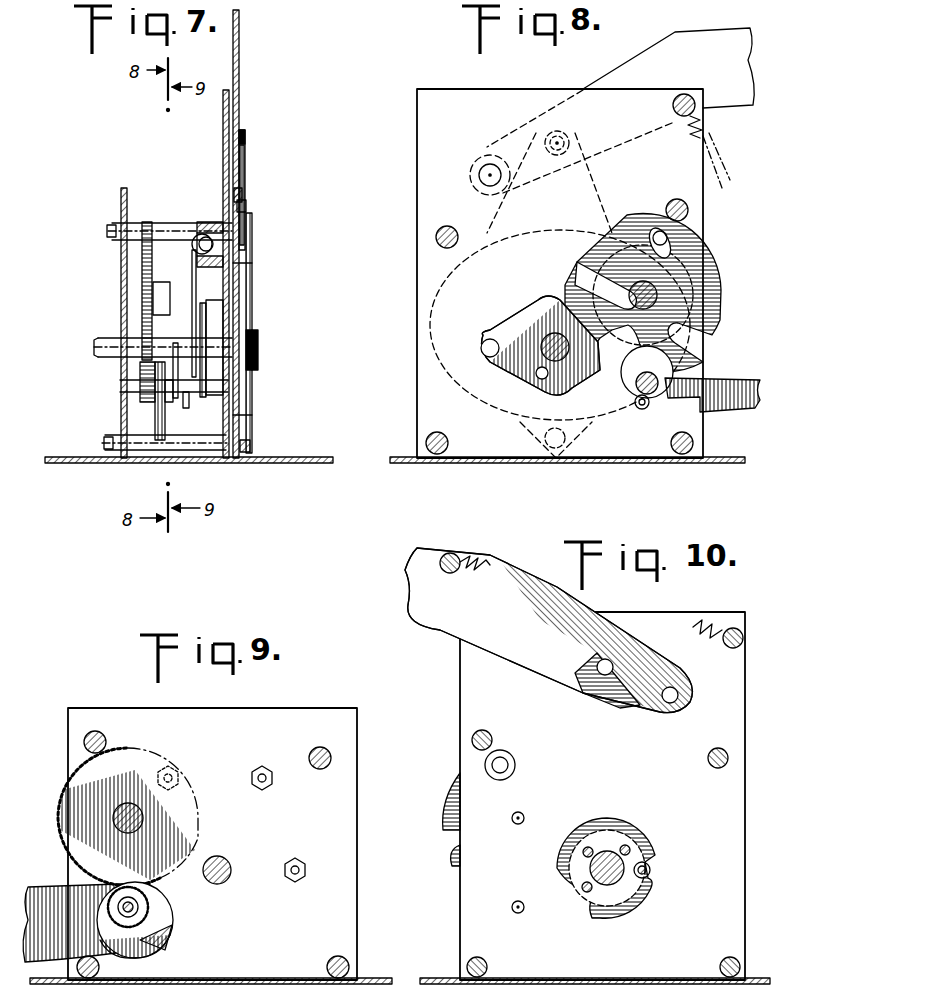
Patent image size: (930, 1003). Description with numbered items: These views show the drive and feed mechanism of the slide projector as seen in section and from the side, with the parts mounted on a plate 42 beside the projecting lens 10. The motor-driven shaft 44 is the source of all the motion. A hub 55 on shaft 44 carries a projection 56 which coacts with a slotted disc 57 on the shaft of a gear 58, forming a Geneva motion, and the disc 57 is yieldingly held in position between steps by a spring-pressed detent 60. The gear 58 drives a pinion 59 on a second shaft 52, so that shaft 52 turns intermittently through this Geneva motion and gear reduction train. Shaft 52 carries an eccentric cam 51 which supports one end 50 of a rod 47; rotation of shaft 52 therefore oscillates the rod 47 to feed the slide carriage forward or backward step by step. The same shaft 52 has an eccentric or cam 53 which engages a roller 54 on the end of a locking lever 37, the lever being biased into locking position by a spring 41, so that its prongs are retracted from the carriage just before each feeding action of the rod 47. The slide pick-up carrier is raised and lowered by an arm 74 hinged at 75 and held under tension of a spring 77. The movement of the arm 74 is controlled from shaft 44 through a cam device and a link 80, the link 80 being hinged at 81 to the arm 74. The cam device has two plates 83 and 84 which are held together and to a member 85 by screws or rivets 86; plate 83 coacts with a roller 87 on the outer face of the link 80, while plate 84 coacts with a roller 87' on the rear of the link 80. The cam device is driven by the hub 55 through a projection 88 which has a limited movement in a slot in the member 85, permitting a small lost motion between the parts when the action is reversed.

In FIG. 7, the projecting lens 10 is at (252, 265).
In FIG. 8, the locking lever 37 is at (748, 380).
In FIG. 8, the spring 41 is at (700, 136).
In FIG. 7, the plate 42 is at (223, 117).
In FIG. 8, the plate 42 is at (472, 98).
In FIG. 9, the plate 42 is at (322, 718).
In FIG. 10, the plate 42 is at (735, 665).
In FIG. 7, the shaft 44 is at (110, 340).
In FIG. 8, the shaft 44 is at (554, 333).
In FIG. 9, the shaft 44 is at (231, 864).
In FIG. 10, the shaft 44 is at (607, 851).
In FIG. 9, the rod 47 is at (55, 895).
In FIG. 7, the end of rod 50 is at (160, 440).
In FIG. 9, the end of rod 50 is at (165, 935).
In FIG. 7, the eccentric cam 51 is at (155, 415).
In FIG. 9, the eccentric cam 51 is at (160, 948).
In FIG. 7, the shaft 52 is at (173, 395).
In FIG. 8, the shaft 52 is at (636, 385).
In FIG. 9, the shaft 52 is at (150, 912).
In FIG. 7, the eccentric or cam 53 is at (175, 343).
In FIG. 8, the eccentric or cam 53 is at (650, 355).
In FIG. 7, the roller 54 is at (186, 408).
In FIG. 8, the roller 54 is at (642, 410).
In FIG. 7, the hub 55 is at (206, 318).
In FIG. 8, the hub 55 is at (520, 318).
In FIG. 7, the projection 56 is at (192, 300).
In FIG. 8, the projection 56 is at (485, 343).
In FIG. 7, the slotted disc 57 is at (183, 222).
In FIG. 8, the slotted disc 57 is at (622, 235).
In FIG. 7, the gear 58 is at (147, 222).
In FIG. 9, the gear 58 is at (85, 793).
In FIG. 7, the pinion 59 is at (140, 385).
In FIG. 9, the pinion 59 is at (150, 897).
In FIG. 7, the spring-pressed detent 60 is at (196, 244).
In FIG. 8, the spring-pressed detent 60 is at (666, 240).
In FIG. 7, the arm 74 is at (240, 50).
In FIG. 8, the arm 74 is at (708, 40).
In FIG. 10, the arm 74 is at (428, 628).
In FIG. 8, the hinge 75 is at (486, 165).
In FIG. 10, the hinge 75 is at (678, 697).
In FIG. 10, the spring 77 is at (490, 565).
In FIG. 7, the link 80 is at (244, 170).
In FIG. 10, the link 80 is at (600, 683).
In FIG. 7, the hinge 81 is at (245, 145).
In FIG. 10, the hinge 81 is at (612, 662).
In FIG. 7, the plate 83 is at (252, 228).
In FIG. 7, the plate 84 is at (246, 210).
In FIG. 7, the member 85 is at (252, 342).
In FIG. 10, the member 85 is at (632, 850).
In FIG. 10, the screws or rivets 86 is at (628, 847).
In FIG. 7, the roller 87 is at (264, 444).
In FIG. 7, the roller 87' is at (278, 185).
In FIG. 10, the projection 88 is at (650, 870).